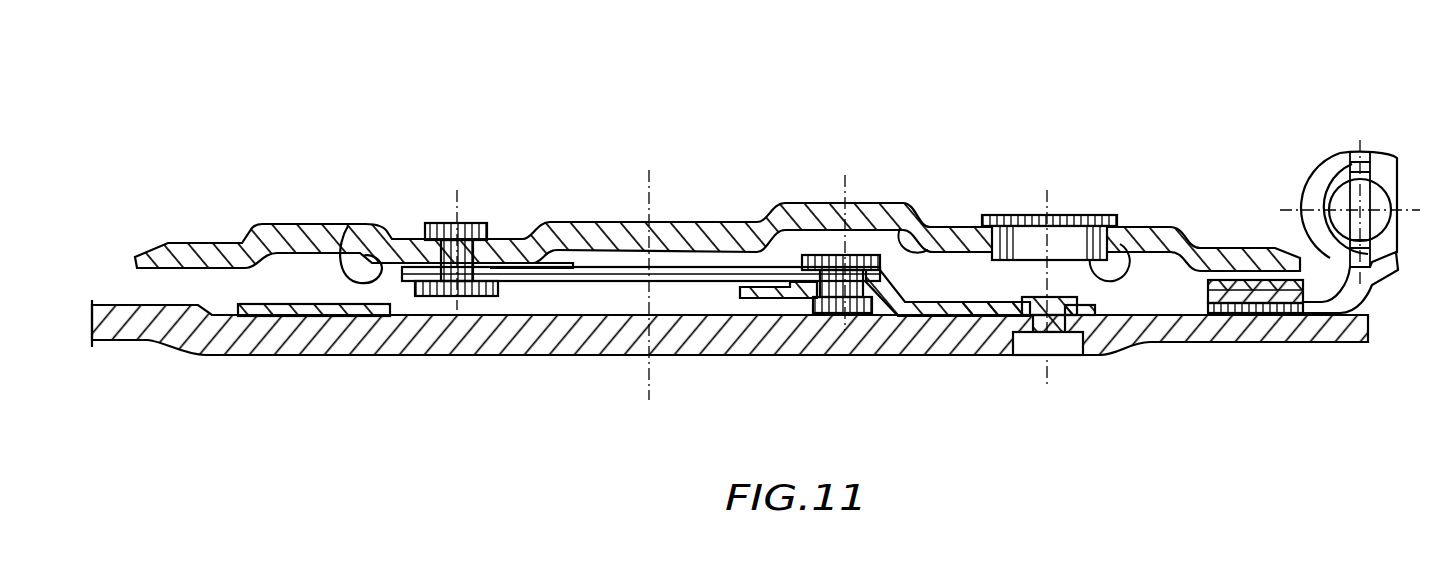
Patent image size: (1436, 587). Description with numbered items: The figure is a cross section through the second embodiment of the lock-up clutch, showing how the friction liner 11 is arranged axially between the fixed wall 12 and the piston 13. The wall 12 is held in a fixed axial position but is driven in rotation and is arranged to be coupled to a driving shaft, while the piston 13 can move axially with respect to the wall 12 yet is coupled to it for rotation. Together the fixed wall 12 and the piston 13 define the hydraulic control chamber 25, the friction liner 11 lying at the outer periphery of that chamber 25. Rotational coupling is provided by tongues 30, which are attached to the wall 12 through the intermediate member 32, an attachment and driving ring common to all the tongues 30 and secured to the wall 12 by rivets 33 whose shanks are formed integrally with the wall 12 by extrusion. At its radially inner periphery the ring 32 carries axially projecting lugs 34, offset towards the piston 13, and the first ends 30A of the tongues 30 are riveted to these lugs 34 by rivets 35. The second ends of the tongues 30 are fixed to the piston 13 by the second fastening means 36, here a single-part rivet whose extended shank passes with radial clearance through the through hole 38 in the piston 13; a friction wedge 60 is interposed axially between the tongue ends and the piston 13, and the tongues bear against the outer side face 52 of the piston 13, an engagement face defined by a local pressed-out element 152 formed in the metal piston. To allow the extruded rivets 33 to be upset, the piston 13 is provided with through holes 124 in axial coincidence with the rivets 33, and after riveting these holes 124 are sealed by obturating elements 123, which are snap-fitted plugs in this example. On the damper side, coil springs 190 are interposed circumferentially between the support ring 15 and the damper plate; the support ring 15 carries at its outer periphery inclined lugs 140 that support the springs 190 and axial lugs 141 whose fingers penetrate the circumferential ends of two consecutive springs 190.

The friction liner 11 is at (1208, 283).
The fixed wall 12 is at (523, 337).
The piston 13 is at (309, 212).
The support ring 15 is at (1280, 313).
The hydraulic control chamber 25 is at (933, 308).
The tongue 30 is at (708, 262).
The first end of tongue 30A is at (932, 250).
The intermediate member (attachment ring) 32 is at (1003, 305).
The rivet 33 is at (1053, 317).
The lug 34 is at (762, 298).
The rivet 35 is at (865, 253).
The second fastening means 36 is at (473, 214).
The through hole in piston 38 is at (443, 252).
The outer side face of piston (external lateral engagement face) 52 is at (350, 224).
The friction wedge 60 is at (568, 256).
The obturating element (plug) 123 is at (1000, 313).
The through hole in piston 124 is at (1140, 253).
The inclined lug 140 is at (1383, 280).
The axial lug 141 is at (1353, 202).
The pressed-out element 152 is at (507, 252).
The coil spring 190 is at (1340, 175).